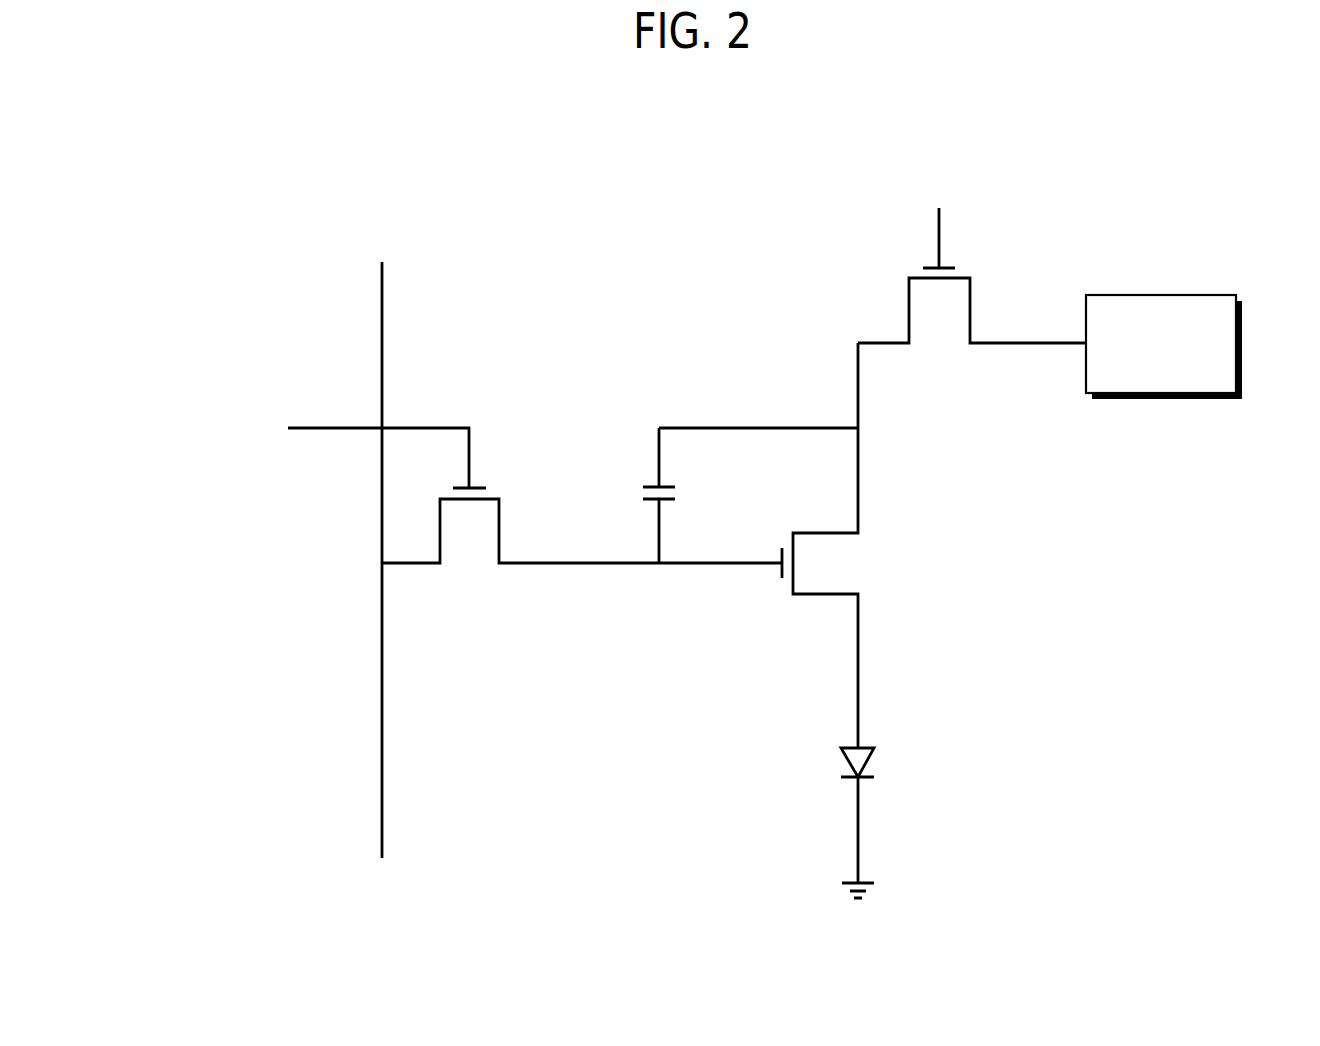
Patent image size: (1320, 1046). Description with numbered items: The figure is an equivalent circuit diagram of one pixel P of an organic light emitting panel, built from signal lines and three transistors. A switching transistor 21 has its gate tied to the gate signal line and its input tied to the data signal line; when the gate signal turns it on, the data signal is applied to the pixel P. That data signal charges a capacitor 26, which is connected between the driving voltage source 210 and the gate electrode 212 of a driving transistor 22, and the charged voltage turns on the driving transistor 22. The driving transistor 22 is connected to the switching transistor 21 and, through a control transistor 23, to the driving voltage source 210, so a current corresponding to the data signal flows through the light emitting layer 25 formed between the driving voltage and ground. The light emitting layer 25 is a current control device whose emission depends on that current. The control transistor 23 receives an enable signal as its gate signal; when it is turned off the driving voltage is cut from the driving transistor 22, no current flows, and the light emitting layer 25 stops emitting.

The pixel P is at (664, 204).
The switching transistor 21 is at (467, 582).
The driving transistor 22 is at (844, 588).
The gate electrode 212 is at (781, 579).
The control transistor 23 is at (959, 361).
The light emitting layer 25 is at (825, 775).
The capacitor 26 is at (646, 417).
The driving voltage source 210 is at (1160, 295).